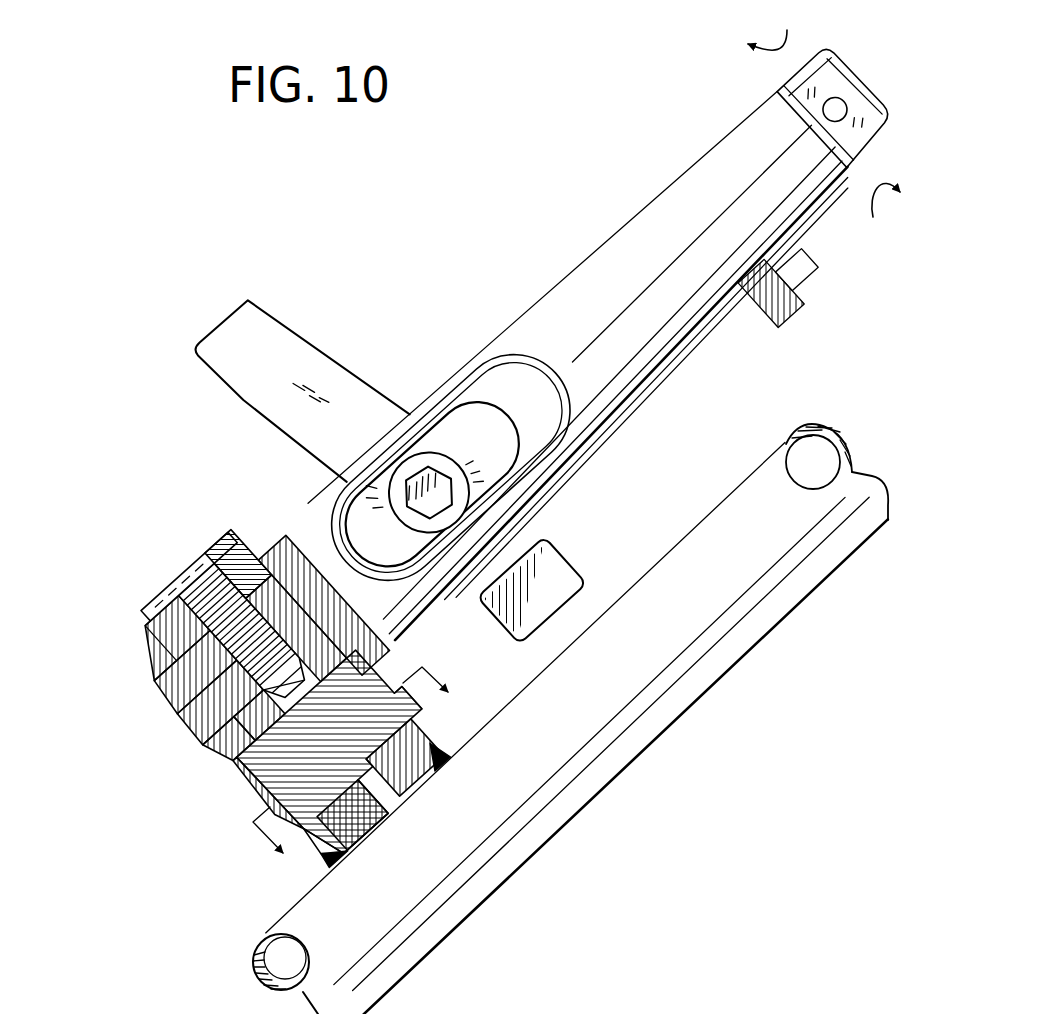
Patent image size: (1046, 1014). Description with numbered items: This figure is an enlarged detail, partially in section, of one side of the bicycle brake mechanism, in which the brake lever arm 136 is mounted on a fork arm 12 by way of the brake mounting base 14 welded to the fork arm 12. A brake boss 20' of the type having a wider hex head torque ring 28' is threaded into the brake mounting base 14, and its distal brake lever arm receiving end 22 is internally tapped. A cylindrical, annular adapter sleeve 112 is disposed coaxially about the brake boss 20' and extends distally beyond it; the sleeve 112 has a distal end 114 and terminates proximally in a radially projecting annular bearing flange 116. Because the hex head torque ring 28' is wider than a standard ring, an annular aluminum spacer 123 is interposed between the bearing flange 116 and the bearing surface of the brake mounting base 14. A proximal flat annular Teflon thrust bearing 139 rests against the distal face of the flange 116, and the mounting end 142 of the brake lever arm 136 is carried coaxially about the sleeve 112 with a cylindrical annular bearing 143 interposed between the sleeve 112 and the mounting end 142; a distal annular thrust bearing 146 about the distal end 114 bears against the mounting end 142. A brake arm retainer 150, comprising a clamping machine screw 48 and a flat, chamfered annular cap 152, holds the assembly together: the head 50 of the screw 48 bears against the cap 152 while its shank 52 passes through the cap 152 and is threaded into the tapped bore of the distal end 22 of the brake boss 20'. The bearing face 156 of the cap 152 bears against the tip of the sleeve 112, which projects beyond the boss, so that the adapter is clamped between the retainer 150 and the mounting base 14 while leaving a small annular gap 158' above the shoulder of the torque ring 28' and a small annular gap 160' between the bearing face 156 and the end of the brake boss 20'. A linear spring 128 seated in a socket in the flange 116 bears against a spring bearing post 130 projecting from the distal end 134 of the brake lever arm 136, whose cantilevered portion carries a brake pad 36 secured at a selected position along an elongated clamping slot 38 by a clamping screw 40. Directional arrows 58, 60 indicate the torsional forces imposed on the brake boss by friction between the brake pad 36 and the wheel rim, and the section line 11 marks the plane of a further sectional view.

The section line 11- 11 is at (338, 749).
The fork arm 12 is at (643, 690).
The brake mounting base 14 is at (420, 727).
The brake boss 20' is at (400, 815).
The distal brake lever arm receiving end 22 is at (247, 738).
The hex head torque ring 28' is at (320, 847).
The brake pad 36 is at (265, 337).
The brake pad clamping slot 38 is at (473, 422).
The clamping screw 40 is at (425, 490).
The clamping machine screw 48 is at (177, 563).
The head 50 is at (173, 583).
The shank 52 is at (250, 708).
The directional arrow 58 is at (823, 87).
The directional arrow 60 is at (879, 214).
The adapter sleeve 112 is at (357, 595).
The distal end of the sleeve 114 is at (210, 660).
The annular bearing flange 116 is at (265, 800).
The annular spacer 123 is at (417, 700).
The linear spring 128 is at (583, 477).
The spring bearing post 130 is at (763, 297).
The distal end of the brake lever arm 134 is at (693, 190).
The brake lever arm 136 is at (578, 248).
The proximal thrust bearing 139 is at (278, 760).
The mounting end 142 is at (300, 558).
The cylindrical annular bearing 143 is at (217, 657).
The distal thrust bearing 146 is at (187, 676).
The brake arm retainer 150 is at (137, 523).
The annular cap 152 is at (135, 620).
The bearing face 156 is at (275, 555).
The annular gap 158' is at (446, 759).
The annular gap 160' is at (181, 633).